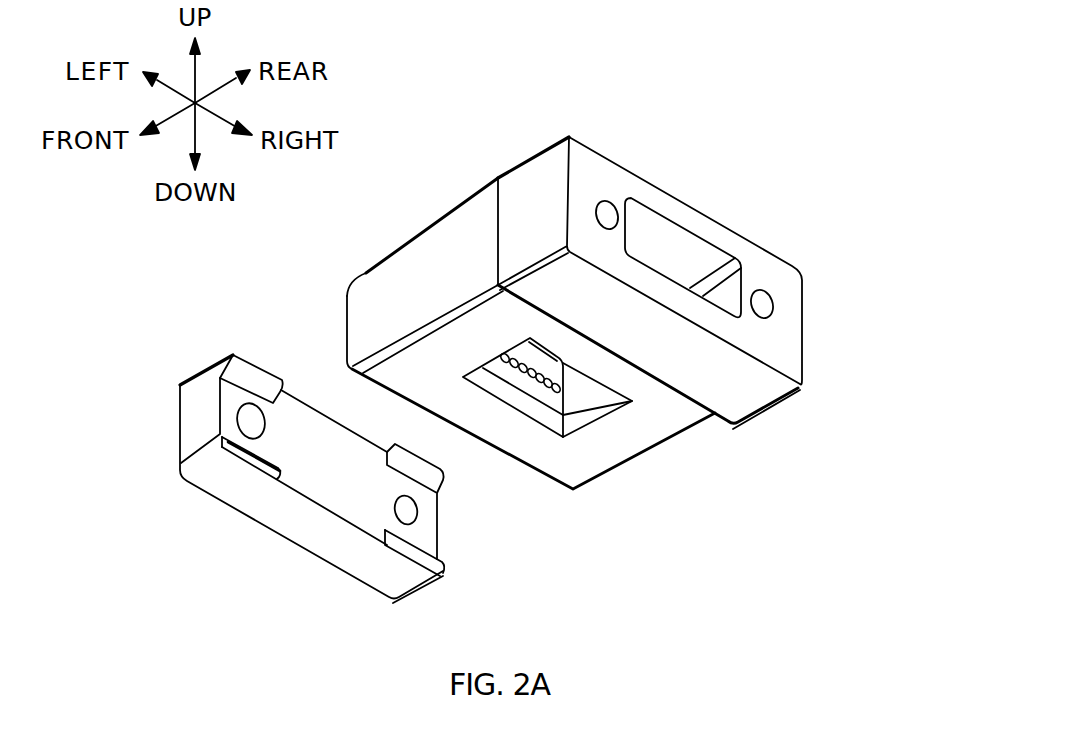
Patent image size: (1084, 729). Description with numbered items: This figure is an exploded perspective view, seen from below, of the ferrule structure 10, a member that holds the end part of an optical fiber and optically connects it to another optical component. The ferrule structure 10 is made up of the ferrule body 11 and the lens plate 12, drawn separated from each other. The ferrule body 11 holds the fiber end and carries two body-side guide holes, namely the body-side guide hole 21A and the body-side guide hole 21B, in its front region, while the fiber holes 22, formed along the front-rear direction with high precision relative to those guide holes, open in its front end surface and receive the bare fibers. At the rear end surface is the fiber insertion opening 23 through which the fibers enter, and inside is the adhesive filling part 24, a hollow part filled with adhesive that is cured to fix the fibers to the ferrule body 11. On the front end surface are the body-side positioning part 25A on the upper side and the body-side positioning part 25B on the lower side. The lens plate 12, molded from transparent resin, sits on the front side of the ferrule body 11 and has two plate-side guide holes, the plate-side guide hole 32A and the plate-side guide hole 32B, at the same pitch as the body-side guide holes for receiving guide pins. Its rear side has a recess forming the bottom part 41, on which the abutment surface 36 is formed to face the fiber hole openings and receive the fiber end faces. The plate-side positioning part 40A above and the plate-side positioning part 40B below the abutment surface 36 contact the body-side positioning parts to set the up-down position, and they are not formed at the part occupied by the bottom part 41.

The ferrule structure 10 is at (457, 368).
The ferrule body 11 is at (417, 222).
The lens plate 12 is at (199, 343).
The body-side guide hole 21A is at (762, 304).
The body-side guide hole 21B is at (607, 215).
The fiber holes 22 is at (548, 385).
The fiber insertion opening 23 is at (674, 241).
The adhesive filling part 24 is at (603, 415).
The body-side positioning part 25A is at (348, 300).
The body-side positioning part 25B is at (340, 372).
The plate-side guide hole 32A is at (407, 510).
The plate-side guide hole 32B is at (250, 420).
The abutment surface 36 is at (335, 467).
The plate-side positioning part 40A is at (267, 377).
The plate-side positioning part 40B is at (245, 490).
The bottom part 41 is at (329, 474).